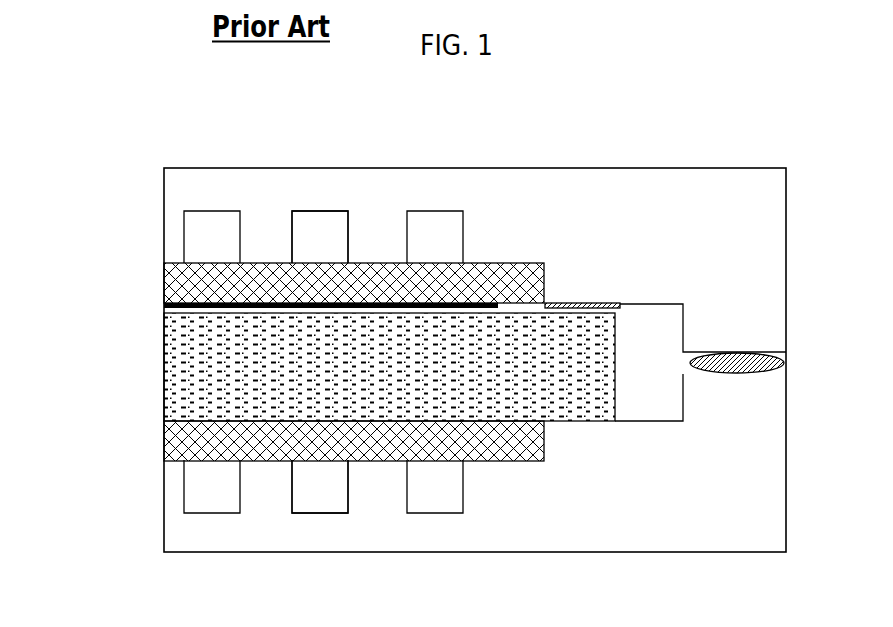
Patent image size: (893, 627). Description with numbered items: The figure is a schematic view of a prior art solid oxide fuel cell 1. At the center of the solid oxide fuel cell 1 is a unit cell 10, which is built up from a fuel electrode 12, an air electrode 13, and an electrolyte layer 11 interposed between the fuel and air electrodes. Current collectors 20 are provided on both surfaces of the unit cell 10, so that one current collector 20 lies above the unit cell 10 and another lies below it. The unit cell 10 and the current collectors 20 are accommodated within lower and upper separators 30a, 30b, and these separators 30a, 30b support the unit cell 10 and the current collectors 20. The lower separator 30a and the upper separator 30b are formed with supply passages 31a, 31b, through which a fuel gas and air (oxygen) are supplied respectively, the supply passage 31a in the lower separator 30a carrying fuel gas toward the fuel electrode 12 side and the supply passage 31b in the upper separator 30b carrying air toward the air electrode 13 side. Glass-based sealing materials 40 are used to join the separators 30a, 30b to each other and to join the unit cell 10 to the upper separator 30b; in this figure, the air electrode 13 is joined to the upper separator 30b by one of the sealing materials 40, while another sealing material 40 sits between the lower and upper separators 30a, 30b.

The solid oxide fuel cell 1 is at (559, 124).
The unit cell 10 is at (68, 288).
The electrolyte layer 11 is at (163, 311).
The fuel electrode 12 is at (176, 387).
The air electrode 13 is at (163, 305).
The current collector 20 is at (163, 273).
The lower separator 30a is at (390, 527).
The upper separator 30b is at (263, 183).
The supply passage 31a is at (316, 497).
The supply passage 31b is at (322, 228).
The sealing material 40 is at (583, 303).